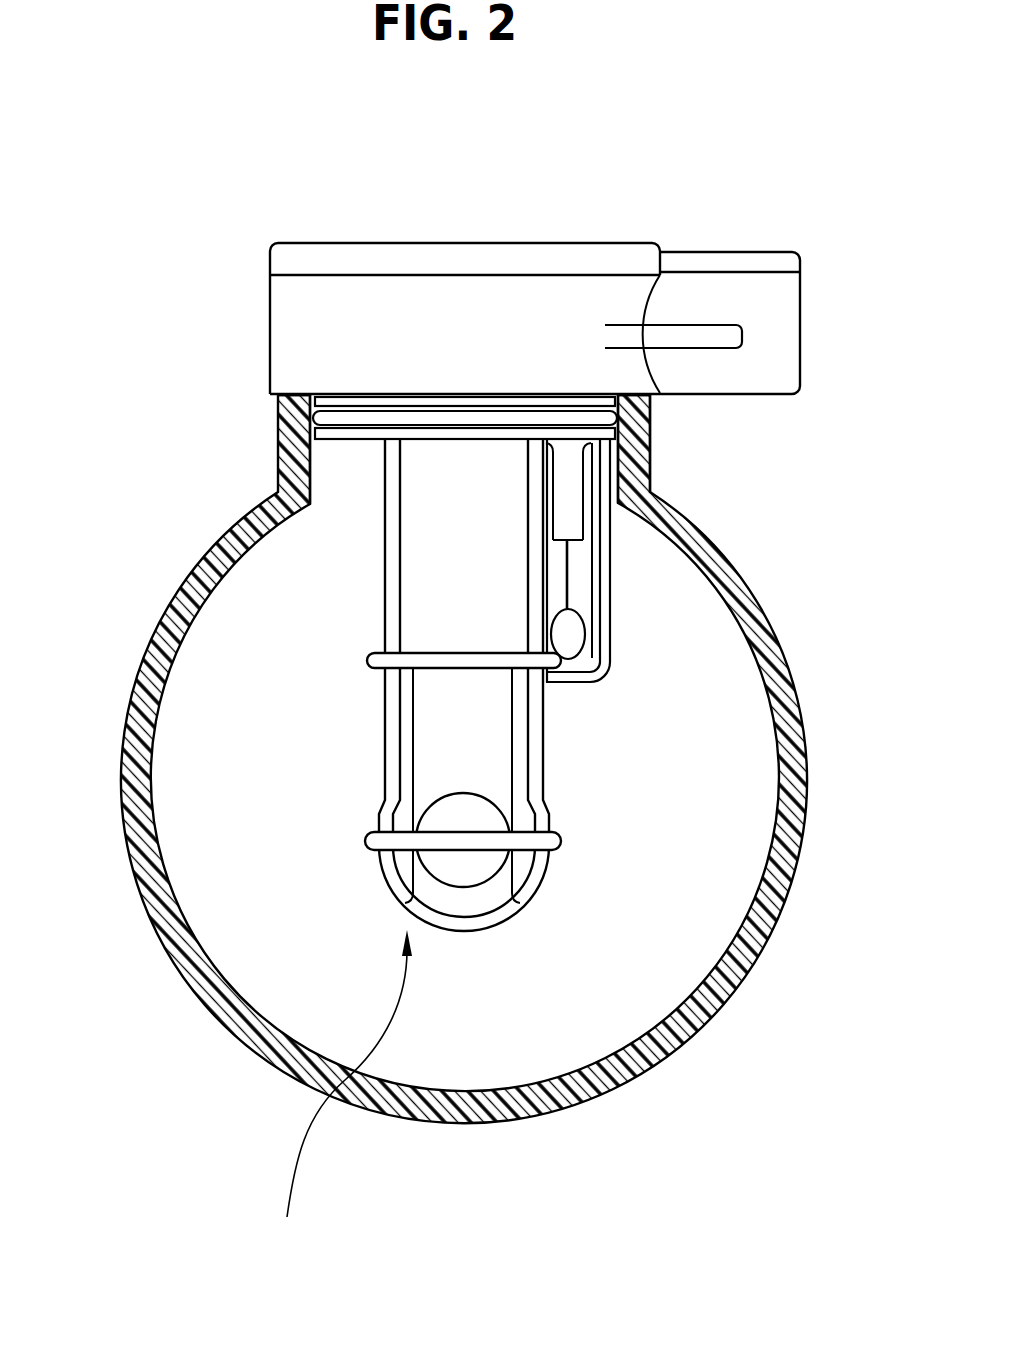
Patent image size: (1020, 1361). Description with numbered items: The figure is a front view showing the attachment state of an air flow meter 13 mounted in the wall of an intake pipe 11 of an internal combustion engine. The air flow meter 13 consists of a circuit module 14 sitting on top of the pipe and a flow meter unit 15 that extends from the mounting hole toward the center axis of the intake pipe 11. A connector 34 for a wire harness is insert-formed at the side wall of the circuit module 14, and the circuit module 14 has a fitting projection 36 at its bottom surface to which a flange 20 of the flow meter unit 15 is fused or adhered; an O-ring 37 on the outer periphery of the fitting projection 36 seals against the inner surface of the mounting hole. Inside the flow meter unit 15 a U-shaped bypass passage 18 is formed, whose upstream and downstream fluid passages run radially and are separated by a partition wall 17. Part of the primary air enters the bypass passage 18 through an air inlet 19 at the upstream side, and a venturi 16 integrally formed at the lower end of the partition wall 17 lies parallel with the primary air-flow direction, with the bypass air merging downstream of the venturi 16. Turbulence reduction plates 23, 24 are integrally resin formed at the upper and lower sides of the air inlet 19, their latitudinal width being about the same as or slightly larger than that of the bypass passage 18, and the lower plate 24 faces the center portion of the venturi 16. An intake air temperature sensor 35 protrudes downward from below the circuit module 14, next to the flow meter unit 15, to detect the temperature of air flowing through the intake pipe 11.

The intake pipe 11 is at (160, 620).
The air flow meter 13 is at (341, 1089).
The circuit module 14 is at (388, 242).
The flow meter unit 15 is at (385, 572).
The venturi 16 is at (486, 876).
The partition wall 17 is at (482, 747).
The bypass passage 18 is at (455, 612).
The air inlet 19 is at (503, 721).
The flange 20 is at (347, 440).
The upper turbulence reduction plate 23 is at (450, 668).
The lower turbulence reduction plate 24 is at (441, 855).
The connector 34 is at (800, 325).
The intake air temperature sensor 35 is at (575, 632).
The fitting projection 36 is at (650, 402).
The O-ring 37 is at (650, 425).